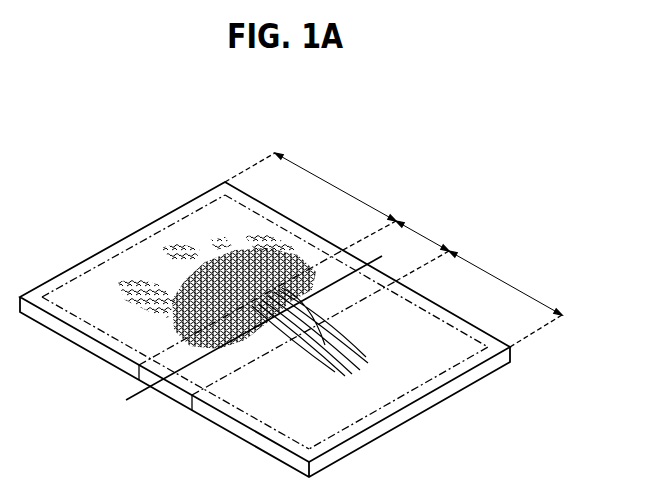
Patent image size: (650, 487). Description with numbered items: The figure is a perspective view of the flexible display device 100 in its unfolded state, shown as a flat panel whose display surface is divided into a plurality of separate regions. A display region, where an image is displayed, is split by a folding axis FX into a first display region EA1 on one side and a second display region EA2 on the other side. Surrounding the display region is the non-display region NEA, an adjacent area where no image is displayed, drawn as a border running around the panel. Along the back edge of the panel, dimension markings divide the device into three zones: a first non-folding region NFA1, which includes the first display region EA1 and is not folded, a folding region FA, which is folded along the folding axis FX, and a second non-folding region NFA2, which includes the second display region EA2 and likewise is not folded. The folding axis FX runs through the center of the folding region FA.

The flexible display device 100 is at (468, 152).
The non-display region NEA is at (97, 250).
The first display region EA1 is at (160, 245).
The second display region EA2 is at (345, 408).
The first non-folding region NFA1 is at (267, 266).
The second non-folding region NFA2 is at (505, 299).
The folding region FA is at (320, 310).
The folding axis FX is at (241, 337).